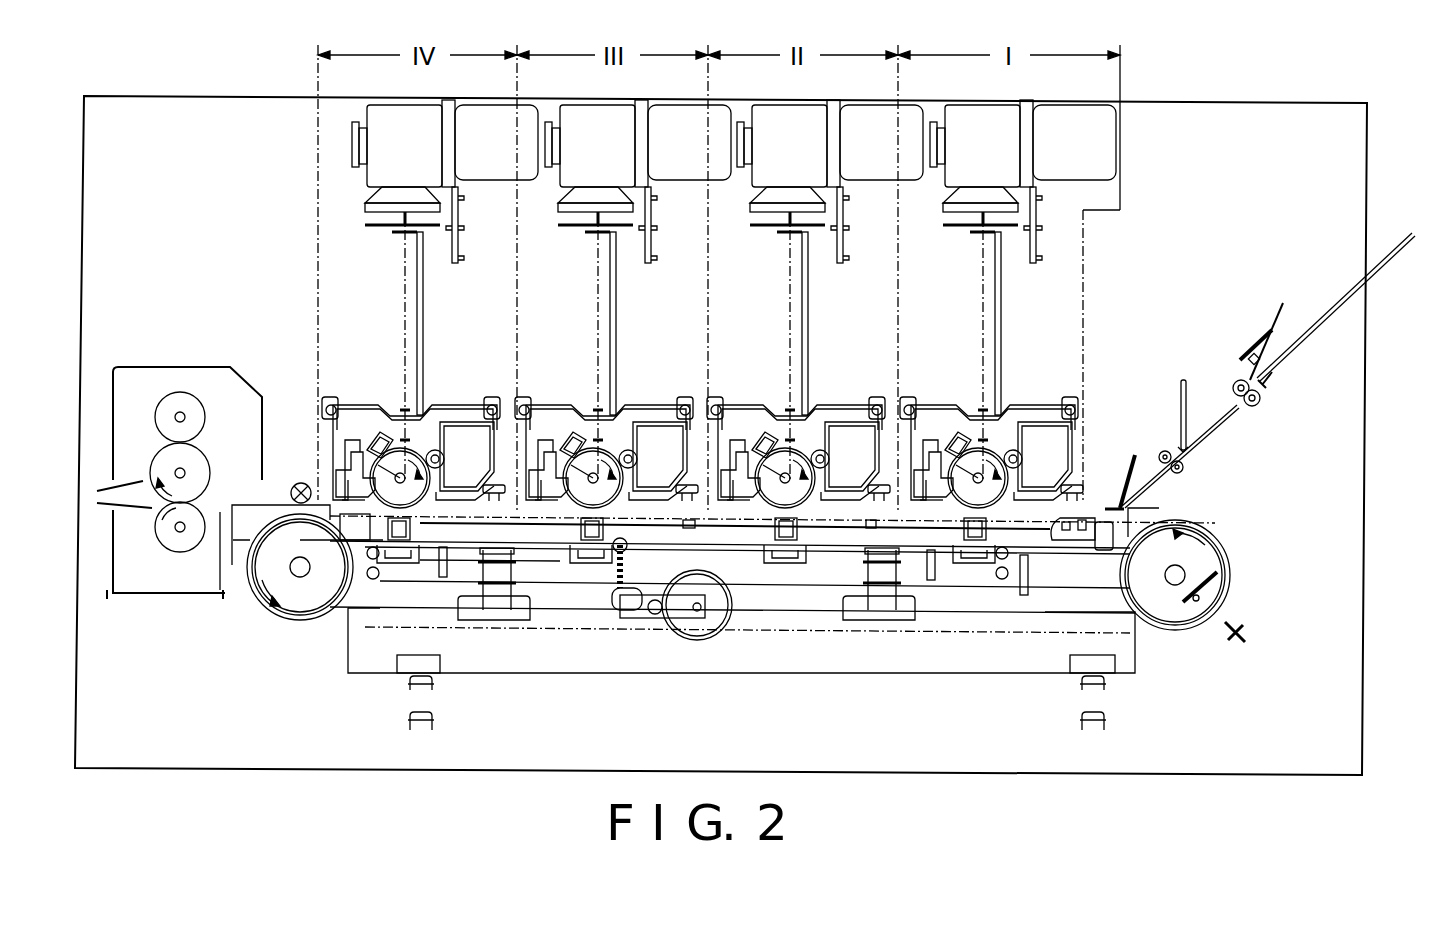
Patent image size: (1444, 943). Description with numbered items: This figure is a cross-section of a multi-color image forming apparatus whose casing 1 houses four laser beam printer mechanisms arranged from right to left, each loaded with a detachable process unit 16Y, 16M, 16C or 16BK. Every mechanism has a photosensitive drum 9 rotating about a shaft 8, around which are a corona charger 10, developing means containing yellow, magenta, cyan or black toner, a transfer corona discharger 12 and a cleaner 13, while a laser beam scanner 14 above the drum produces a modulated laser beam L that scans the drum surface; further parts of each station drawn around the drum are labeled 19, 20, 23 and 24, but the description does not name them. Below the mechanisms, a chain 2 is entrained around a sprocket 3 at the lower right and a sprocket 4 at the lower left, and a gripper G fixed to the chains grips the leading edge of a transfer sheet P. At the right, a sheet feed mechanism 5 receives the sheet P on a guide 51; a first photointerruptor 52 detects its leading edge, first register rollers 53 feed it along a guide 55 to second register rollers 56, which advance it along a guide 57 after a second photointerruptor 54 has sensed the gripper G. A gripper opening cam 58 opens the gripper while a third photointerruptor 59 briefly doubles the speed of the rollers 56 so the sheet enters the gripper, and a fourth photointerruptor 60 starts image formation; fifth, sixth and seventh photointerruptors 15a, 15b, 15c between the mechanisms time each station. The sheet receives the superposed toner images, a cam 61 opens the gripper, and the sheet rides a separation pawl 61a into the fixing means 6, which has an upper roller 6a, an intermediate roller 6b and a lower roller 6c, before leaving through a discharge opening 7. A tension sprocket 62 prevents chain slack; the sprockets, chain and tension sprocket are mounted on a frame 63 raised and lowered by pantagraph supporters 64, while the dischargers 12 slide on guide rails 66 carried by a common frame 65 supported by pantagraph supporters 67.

The casing 1 is at (1262, 103).
The chain 2 is at (722, 522).
The sprocket 3 is at (1215, 560).
The sprocket 4 is at (290, 608).
The sheet feed mechanism 5 is at (1221, 375).
The image fixing means 6 is at (176, 380).
The upper roller 6a is at (193, 405).
The intermediate roller 6b is at (197, 462).
The lower roller 6c is at (172, 540).
The discharge opening 7 is at (97, 497).
The shaft 8 is at (943, 460).
The photosensitive drum 9 is at (976, 445).
The corona charger 10 is at (956, 440).
The transfer corona discharger 12 is at (1010, 553).
The cleaner 13 is at (929, 448).
The laser beam scanner 14 is at (992, 158).
The fifth photointerruptor 15a is at (877, 500).
The sixth photointerruptor 15b is at (685, 500).
The seventh photointerruptor 15c is at (492, 500).
The process unit 16BK is at (440, 412).
The process unit 16C is at (633, 412).
The process unit 16M is at (825, 412).
The process unit 16Y is at (1018, 412).
The frame member 19 is at (917, 412).
The toner supply roller 20 is at (1017, 452).
The support bracket 23 is at (909, 398).
The support bracket 24 is at (1075, 403).
The guide 51 is at (1352, 298).
The first photointerruptor 52 is at (1285, 380).
The first register rollers 53 is at (1258, 402).
The second photointerruptor 54 is at (1240, 632).
The guide 55 is at (1225, 425).
The second register rollers 56 is at (1185, 467).
The guide 57 is at (1183, 440).
The gripper opening cam 58 is at (1100, 550).
The third photointerruptor 59 is at (1118, 505).
The fourth photointerruptor 60 is at (1078, 500).
The cam 61 is at (290, 525).
The separation pawl 61a is at (250, 512).
The tension sprocket 62 is at (697, 640).
The frame 63 is at (1050, 595).
The pantagraph supporters 64 is at (1104, 722).
The common frame 65 is at (840, 585).
The guide rails 66 is at (968, 565).
The pantagraph supporters 67 is at (895, 598).
The gripper G is at (1073, 540).
The laser beam L is at (983, 267).
The transfer sheet P is at (1325, 320).